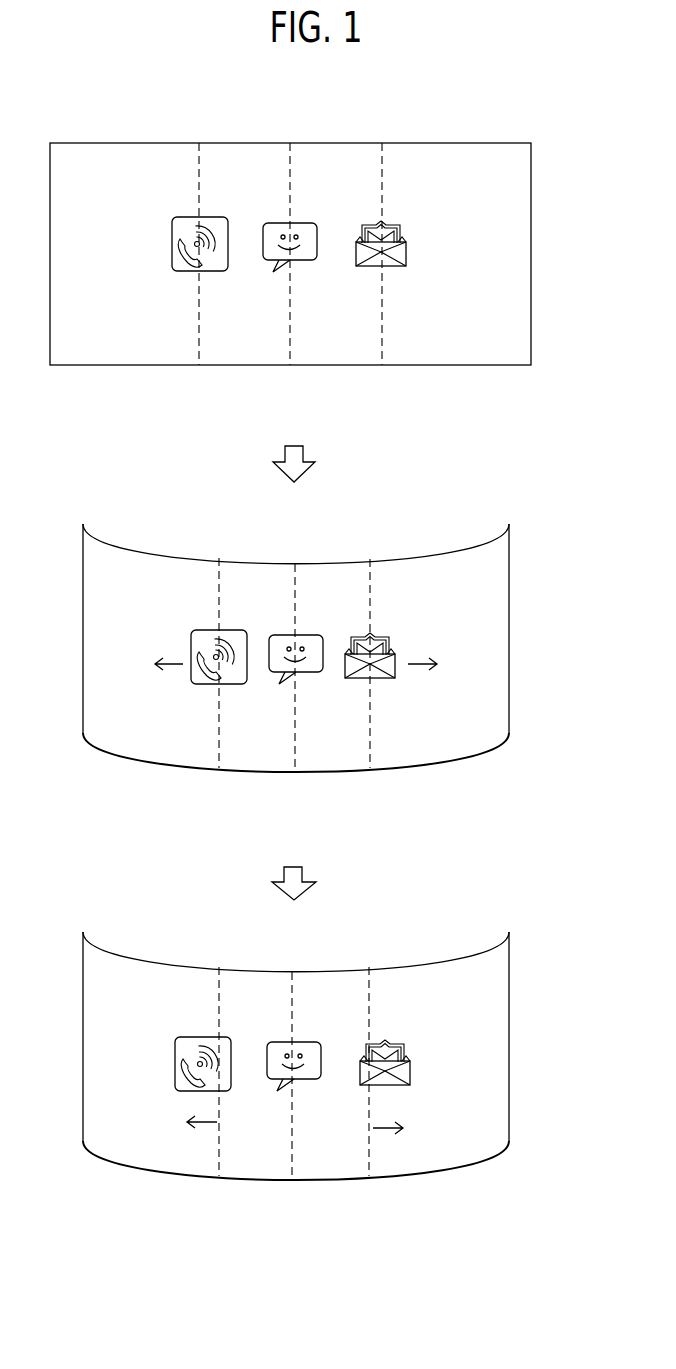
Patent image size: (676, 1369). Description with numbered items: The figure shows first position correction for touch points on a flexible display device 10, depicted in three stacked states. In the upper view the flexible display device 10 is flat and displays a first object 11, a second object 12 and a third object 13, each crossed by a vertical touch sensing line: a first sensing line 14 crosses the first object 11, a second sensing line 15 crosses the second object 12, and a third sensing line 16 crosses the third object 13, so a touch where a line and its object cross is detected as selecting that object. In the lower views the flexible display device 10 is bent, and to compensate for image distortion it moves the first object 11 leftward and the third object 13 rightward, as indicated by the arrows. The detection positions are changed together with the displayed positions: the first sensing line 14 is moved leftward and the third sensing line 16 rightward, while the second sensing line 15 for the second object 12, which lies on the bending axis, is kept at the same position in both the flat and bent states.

The flexible display device 10 is at (491, 336).
The first object 11 is at (187, 217).
The second object 12 is at (280, 223).
The third object 13 is at (369, 221).
The first sensing line 14 is at (199, 333).
The second sensing line 15 is at (290, 333).
The third sensing line 16 is at (382, 333).